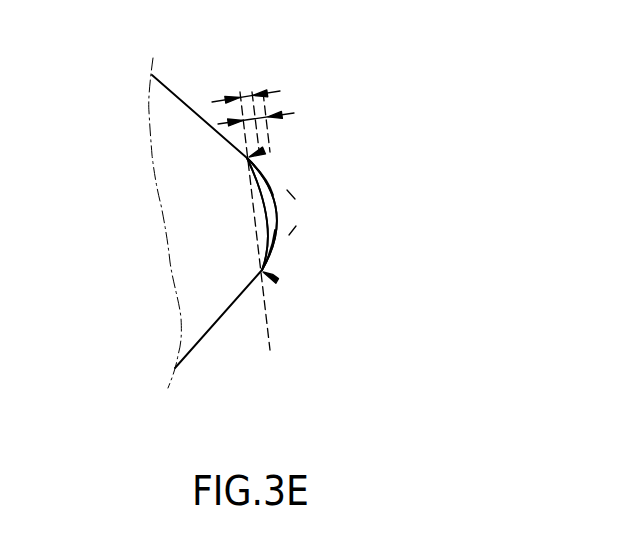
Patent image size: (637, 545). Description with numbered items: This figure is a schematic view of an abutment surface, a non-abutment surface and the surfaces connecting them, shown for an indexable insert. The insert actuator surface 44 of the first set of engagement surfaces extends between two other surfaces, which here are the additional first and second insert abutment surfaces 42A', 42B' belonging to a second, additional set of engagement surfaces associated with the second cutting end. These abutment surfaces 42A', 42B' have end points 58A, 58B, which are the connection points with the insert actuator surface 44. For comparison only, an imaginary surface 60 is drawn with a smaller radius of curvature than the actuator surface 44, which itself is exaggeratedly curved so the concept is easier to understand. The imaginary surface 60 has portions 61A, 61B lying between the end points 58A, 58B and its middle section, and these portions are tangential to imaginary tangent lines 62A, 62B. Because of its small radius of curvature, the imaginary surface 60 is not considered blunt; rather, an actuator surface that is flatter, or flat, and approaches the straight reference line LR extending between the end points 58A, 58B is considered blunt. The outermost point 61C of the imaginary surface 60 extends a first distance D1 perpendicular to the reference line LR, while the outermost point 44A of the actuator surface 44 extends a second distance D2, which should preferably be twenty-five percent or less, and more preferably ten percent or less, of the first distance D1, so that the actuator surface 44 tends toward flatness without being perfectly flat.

The additional second insert abutment surface 42B' is at (216, 96).
The additional first insert abutment surface 42A' is at (218, 342).
The insert actuator surface 44 is at (262, 213).
The outermost point of the actuator surface 44A is at (180, 214).
The imaginary surface 60 is at (277, 211).
The outermost point of the imaginary surface 61C is at (338, 214).
The portion of the imaginary surface 61B is at (268, 172).
The portion of the imaginary surface 61A is at (262, 269).
The end point 58B is at (267, 148).
The end point 58A is at (276, 286).
The imaginary tangent line 62B is at (259, 181).
The imaginary tangent line 62A is at (281, 240).
The first distance D1 is at (294, 113).
The second distance D2 is at (281, 92).
The straight reference line LR is at (270, 346).